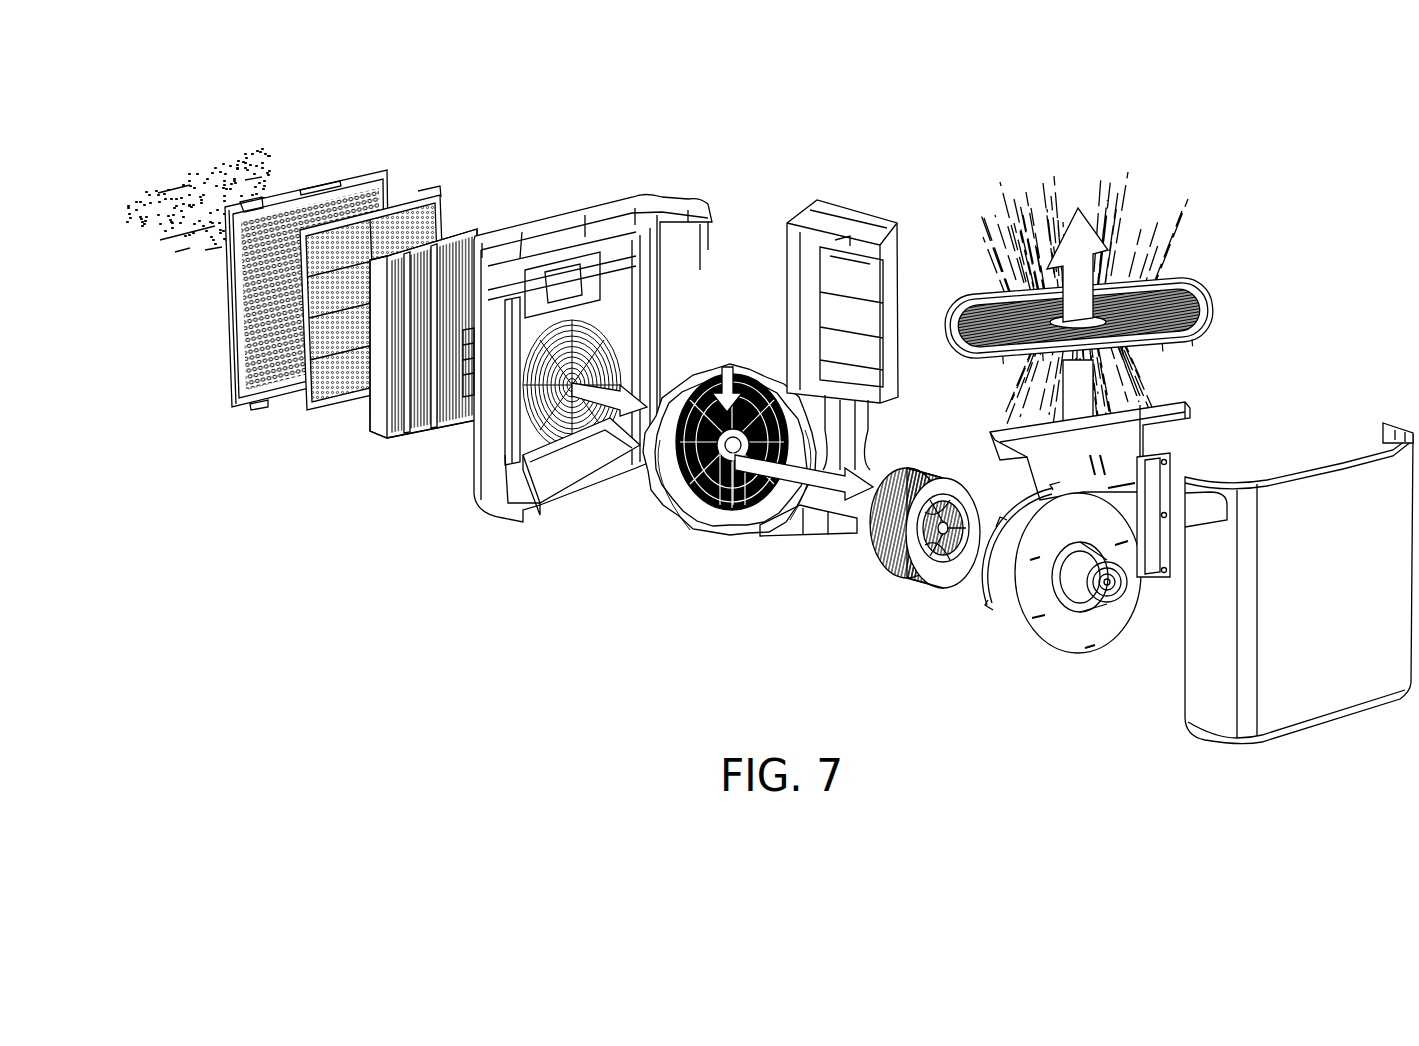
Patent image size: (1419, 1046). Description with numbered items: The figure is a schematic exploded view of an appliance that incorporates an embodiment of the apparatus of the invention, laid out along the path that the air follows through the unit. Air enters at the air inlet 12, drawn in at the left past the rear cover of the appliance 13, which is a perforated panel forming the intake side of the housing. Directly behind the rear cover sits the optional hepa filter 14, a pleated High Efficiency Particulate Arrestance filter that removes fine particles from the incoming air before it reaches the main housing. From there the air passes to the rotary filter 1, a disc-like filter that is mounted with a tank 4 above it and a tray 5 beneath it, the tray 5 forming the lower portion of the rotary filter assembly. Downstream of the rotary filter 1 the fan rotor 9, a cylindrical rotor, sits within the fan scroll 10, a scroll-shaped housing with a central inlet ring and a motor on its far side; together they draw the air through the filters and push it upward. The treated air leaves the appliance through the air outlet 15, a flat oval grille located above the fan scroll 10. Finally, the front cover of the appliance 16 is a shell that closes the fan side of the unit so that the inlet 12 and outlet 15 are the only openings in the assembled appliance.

The rotary filter 1 is at (730, 377).
The tank 4 is at (868, 263).
The tray 5 is at (745, 521).
The fan rotor 9 is at (890, 550).
The fan scroll 10 is at (1012, 620).
The air inlet 12 is at (205, 187).
The rear cover of the appliance 13 is at (225, 299).
The hepa filter 14 is at (377, 415).
The air outlet 15 is at (1178, 303).
The front cover of the appliance 16 is at (1330, 480).